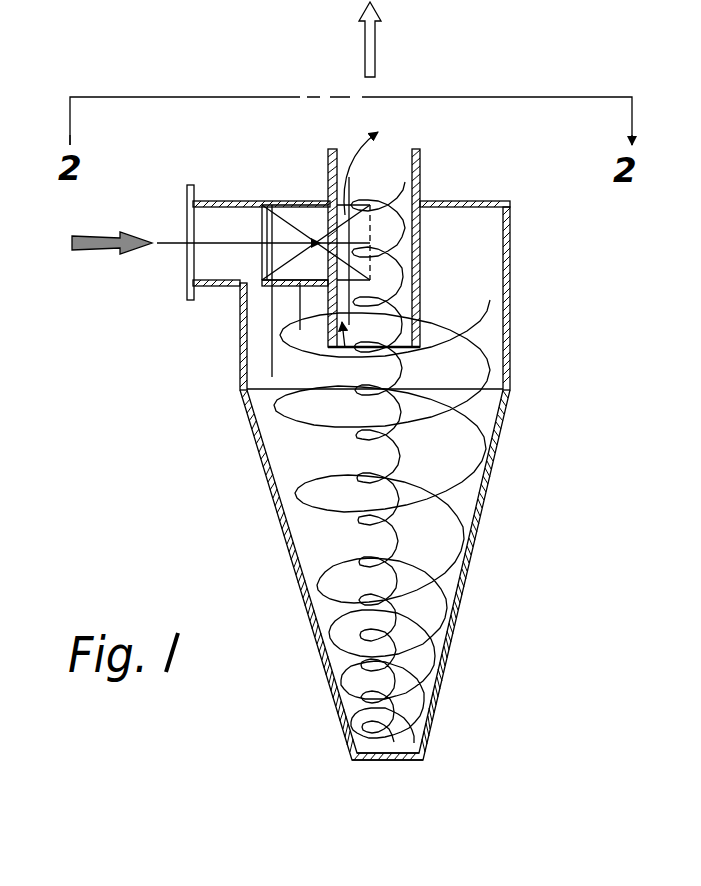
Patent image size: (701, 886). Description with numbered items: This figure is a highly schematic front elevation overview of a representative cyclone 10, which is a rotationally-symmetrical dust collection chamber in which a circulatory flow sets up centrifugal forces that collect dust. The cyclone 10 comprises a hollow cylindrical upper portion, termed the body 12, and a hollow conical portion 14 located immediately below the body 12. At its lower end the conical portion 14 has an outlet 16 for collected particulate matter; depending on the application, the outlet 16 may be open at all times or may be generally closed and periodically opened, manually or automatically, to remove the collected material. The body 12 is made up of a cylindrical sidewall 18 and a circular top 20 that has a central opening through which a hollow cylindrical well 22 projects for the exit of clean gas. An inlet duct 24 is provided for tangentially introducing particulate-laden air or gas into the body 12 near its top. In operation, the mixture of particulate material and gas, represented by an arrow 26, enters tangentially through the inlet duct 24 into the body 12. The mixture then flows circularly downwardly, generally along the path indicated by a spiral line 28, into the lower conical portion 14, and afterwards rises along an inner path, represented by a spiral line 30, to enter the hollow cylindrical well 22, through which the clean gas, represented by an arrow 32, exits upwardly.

The cyclone 10 is at (135, 486).
The body 12 is at (508, 313).
The conical portion 14 is at (477, 541).
The outlet 16 is at (413, 762).
The cylindrical sidewall 18 is at (506, 265).
The circular top 20 is at (473, 200).
The hollow cylindrical well 22 is at (420, 183).
The inlet duct 24 is at (218, 200).
The arrow 26 is at (90, 250).
The spiral line 28 is at (487, 362).
The spiral line 30 is at (345, 412).
The arrow 32 is at (376, 57).